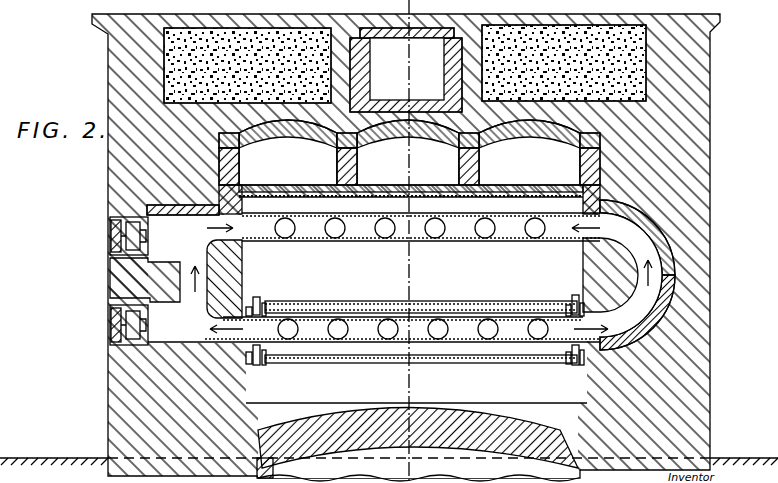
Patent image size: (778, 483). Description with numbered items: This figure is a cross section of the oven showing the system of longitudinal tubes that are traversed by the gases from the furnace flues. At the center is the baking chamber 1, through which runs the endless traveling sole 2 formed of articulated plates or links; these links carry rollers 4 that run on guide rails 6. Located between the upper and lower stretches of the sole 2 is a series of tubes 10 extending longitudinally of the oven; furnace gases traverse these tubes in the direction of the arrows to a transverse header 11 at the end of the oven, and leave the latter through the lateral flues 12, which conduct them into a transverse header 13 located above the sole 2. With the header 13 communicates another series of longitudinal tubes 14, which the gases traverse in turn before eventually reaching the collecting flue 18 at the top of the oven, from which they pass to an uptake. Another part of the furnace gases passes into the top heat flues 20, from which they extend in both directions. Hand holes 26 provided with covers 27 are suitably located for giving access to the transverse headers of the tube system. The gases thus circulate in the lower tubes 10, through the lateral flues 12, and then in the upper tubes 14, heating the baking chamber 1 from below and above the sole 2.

The baking chamber 1 is at (421, 243).
The endless traveling sole 2 is at (442, 363).
The rollers 4 is at (570, 365).
The guide rails 6 is at (572, 368).
The tubes 10 is at (442, 334).
The transverse header 11 is at (362, 330).
The lateral flues 12 is at (428, 275).
The transverse header 13 is at (457, 229).
The longitudinal tubes 14 is at (534, 233).
The collecting flue 18 is at (406, 70).
The top heat flues 20 is at (409, 152).
The hand holes 26 is at (160, 328).
The covers 27 is at (110, 332).